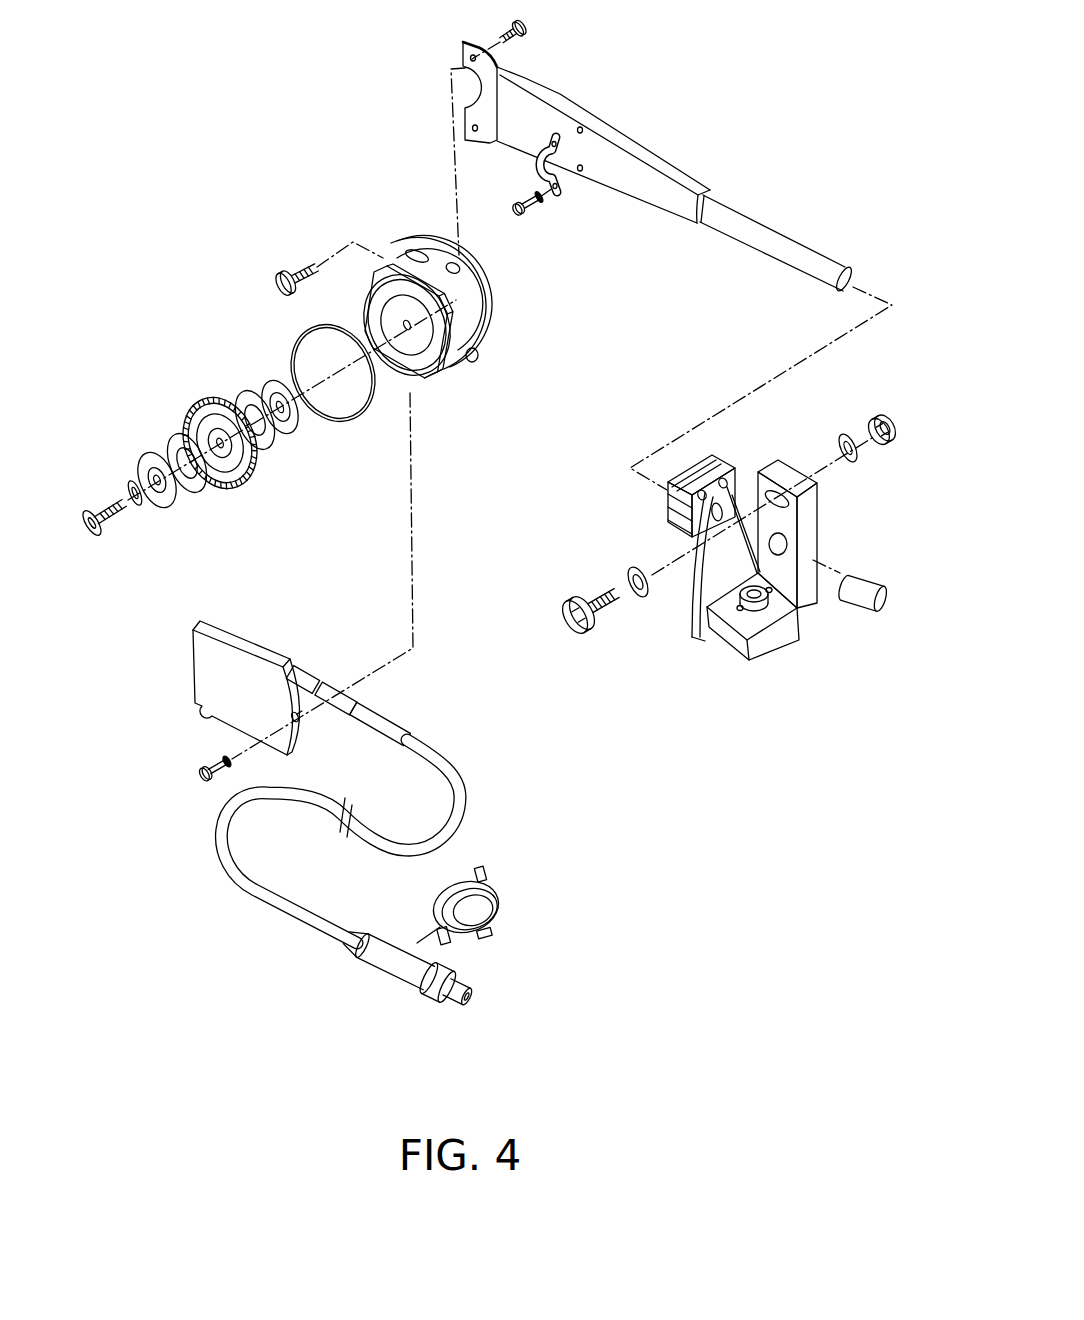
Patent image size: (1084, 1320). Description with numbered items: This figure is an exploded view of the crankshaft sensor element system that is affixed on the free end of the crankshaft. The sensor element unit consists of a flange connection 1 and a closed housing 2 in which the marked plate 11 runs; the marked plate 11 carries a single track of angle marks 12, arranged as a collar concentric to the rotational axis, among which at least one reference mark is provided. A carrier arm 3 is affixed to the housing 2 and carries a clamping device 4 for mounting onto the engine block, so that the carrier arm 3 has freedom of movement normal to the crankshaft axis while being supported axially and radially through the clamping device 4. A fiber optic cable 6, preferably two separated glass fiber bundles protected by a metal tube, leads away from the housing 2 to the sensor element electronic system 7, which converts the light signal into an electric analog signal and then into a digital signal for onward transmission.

The flange connection 1 is at (462, 302).
The closed housing 2 is at (230, 673).
The carrier arm 3 is at (762, 247).
The clamping device 4 is at (807, 532).
The fiber optic cable 6 is at (228, 858).
The sensor element electronic system 7 is at (393, 963).
The marked plate 11 is at (250, 480).
The angle marks 12 is at (200, 400).